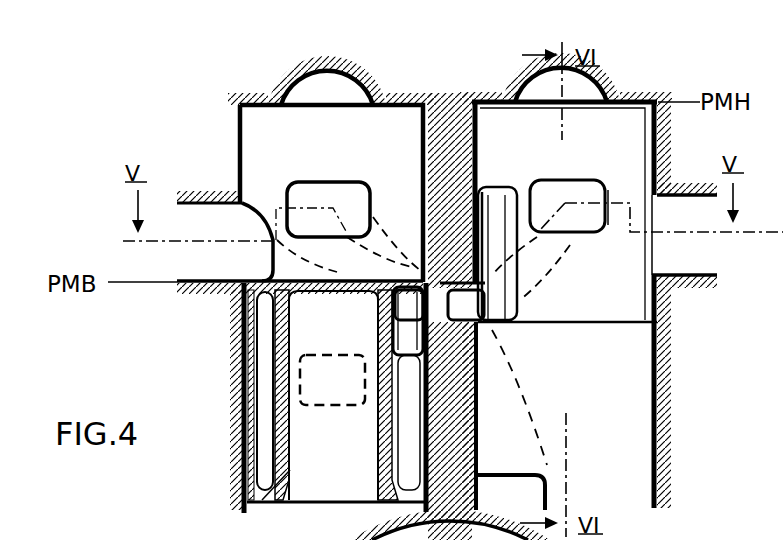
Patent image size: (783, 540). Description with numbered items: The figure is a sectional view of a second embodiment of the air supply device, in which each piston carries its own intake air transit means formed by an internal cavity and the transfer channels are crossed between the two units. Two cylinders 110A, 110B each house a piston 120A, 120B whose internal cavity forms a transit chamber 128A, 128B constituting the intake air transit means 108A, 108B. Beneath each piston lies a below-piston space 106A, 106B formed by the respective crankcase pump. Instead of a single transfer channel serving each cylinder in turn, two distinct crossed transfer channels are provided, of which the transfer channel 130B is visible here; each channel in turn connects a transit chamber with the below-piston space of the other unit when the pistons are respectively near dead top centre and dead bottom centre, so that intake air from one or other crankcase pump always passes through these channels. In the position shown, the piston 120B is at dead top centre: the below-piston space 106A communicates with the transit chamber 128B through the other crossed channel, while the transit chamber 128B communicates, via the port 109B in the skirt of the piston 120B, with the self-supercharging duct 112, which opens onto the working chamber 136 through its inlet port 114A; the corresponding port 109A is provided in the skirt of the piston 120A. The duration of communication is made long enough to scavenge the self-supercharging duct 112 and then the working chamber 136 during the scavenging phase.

The below-piston space 106A is at (275, 505).
The below-piston space 106B is at (630, 485).
The intake air transit means 108A is at (265, 390).
The intake air transit means 108B is at (502, 275).
The port 109A is at (326, 355).
The port 109B is at (566, 180).
The cylinder 110A is at (240, 141).
The cylinder 110B is at (663, 148).
The self-supercharging duct 112 is at (440, 252).
The inlet port 114A is at (332, 192).
The piston 120A is at (277, 335).
The piston 120B is at (660, 102).
The transit chamber 128A is at (263, 447).
The transit chamber 128B is at (508, 282).
The transfer channel 130B is at (535, 428).
The working chamber 136 is at (262, 128).